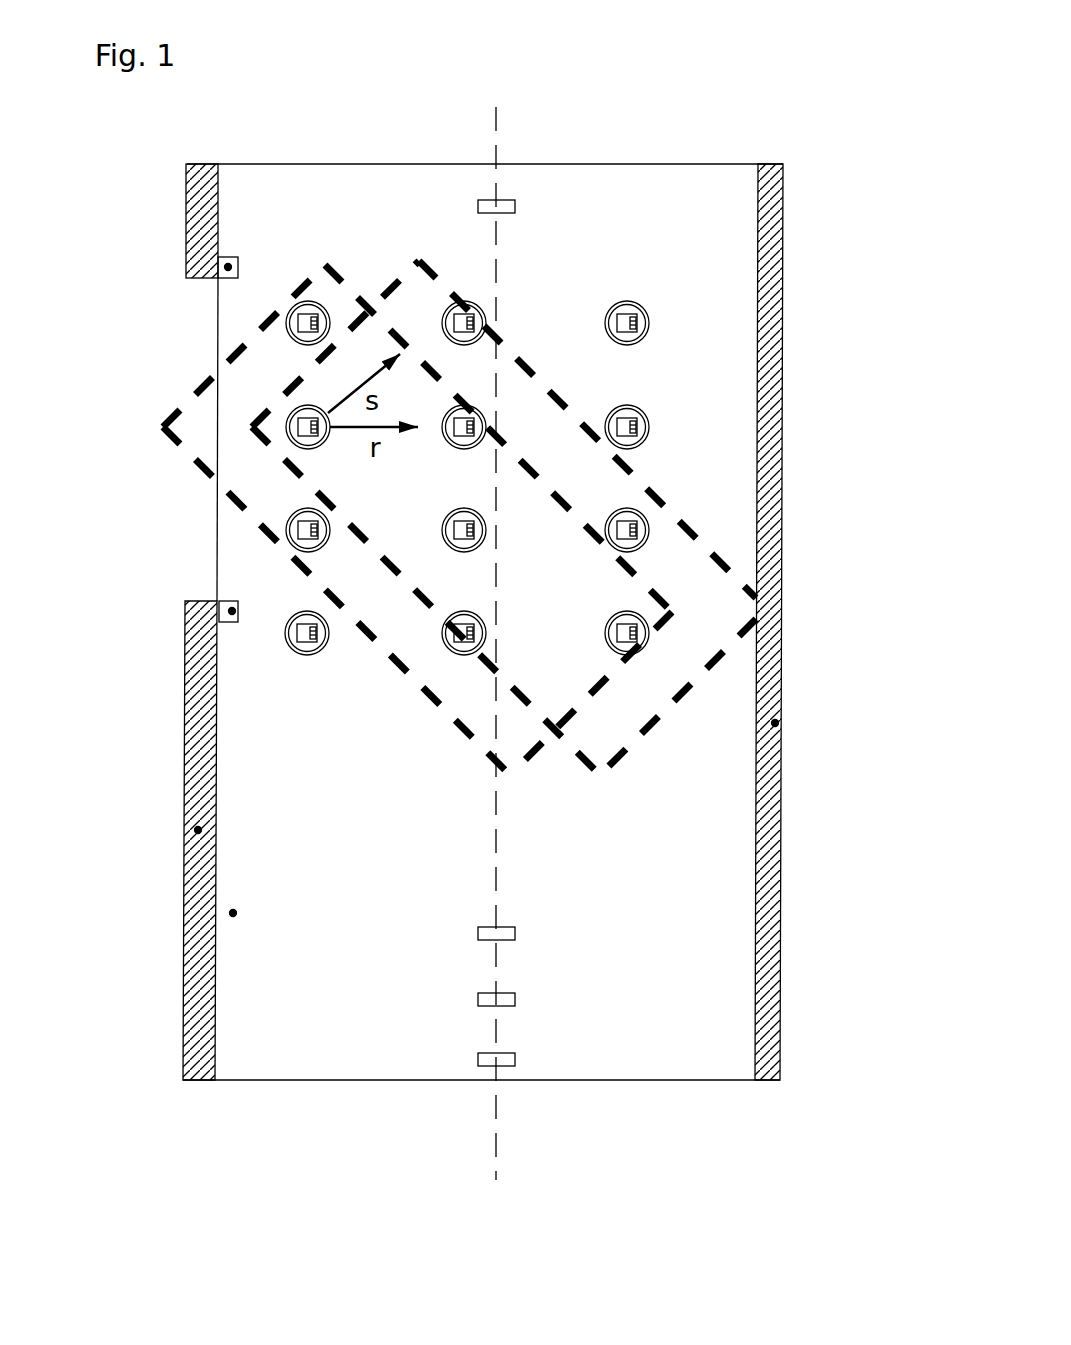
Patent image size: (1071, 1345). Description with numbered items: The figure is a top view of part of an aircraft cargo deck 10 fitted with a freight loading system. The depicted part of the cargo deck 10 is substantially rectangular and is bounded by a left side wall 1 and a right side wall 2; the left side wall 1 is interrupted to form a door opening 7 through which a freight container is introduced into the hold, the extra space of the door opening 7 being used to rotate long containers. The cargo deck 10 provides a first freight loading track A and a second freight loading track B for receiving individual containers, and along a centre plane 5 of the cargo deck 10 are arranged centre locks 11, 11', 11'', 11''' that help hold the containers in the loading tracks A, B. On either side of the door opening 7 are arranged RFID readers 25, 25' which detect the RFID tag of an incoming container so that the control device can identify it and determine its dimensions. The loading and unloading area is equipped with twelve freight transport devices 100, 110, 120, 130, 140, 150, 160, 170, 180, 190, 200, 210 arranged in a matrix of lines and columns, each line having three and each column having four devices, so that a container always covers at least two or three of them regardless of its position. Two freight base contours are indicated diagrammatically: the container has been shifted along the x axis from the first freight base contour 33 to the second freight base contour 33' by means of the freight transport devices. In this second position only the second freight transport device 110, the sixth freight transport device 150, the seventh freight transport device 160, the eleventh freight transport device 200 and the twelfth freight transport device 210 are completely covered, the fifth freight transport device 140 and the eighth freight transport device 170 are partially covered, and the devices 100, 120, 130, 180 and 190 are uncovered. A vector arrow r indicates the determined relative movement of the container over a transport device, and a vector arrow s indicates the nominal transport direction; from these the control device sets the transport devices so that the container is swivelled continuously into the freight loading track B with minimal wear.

The first freight loading track A is at (338, 152).
The second freight loading track B is at (607, 160).
The left side wall 1 is at (198, 830).
The right side wall 2 is at (775, 723).
The centre plane 5 is at (488, 1117).
The door opening 7 is at (192, 436).
The cargo deck 10 is at (233, 913).
The centre lock 11 is at (527, 1128).
The centre lock 11' is at (573, 1089).
The centre lock 11'' is at (611, 1051).
The centre lock 11''' is at (550, 135).
The RFID reader 25 is at (162, 626).
The RFID reader 25' is at (157, 235).
The first freight base contour 33 is at (647, 924).
The second freight base contour 33' is at (716, 880).
The freight transport device 100 is at (283, 323).
The second freight transport device 110 is at (280, 426).
The freight transport device 120 is at (280, 530).
The freight transport device 130 is at (280, 634).
The fifth freight transport device 140 is at (465, 405).
The sixth freight transport device 150 is at (461, 298).
The seventh freight transport device 160 is at (442, 530).
The eighth freight transport device 170 is at (463, 655).
The freight transport device 180 is at (627, 296).
The freight transport device 190 is at (627, 405).
The eleventh freight transport device 200 is at (658, 530).
The twelfth freight transport device 210 is at (653, 633).